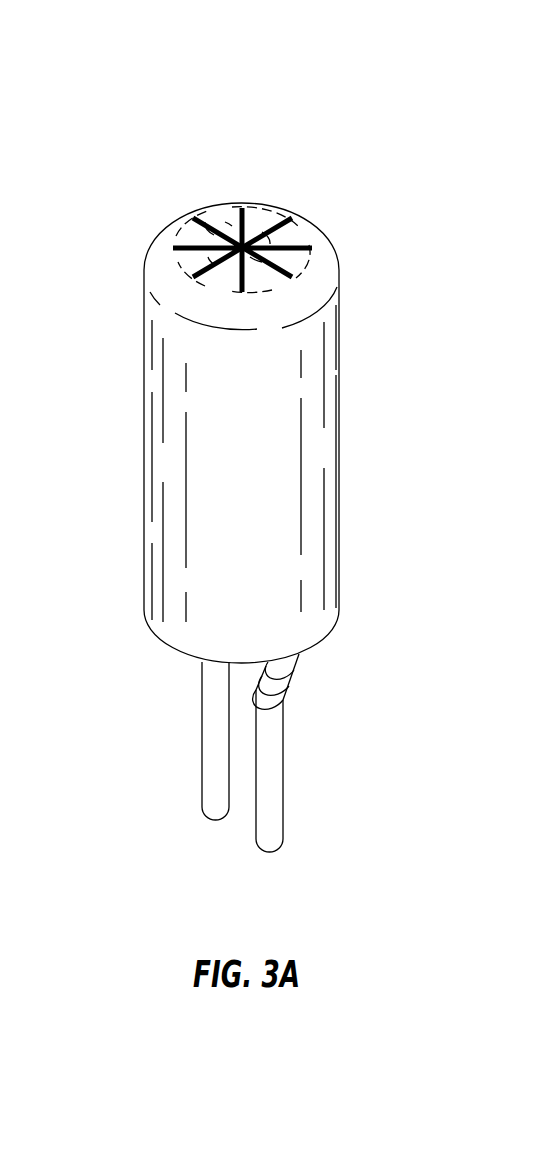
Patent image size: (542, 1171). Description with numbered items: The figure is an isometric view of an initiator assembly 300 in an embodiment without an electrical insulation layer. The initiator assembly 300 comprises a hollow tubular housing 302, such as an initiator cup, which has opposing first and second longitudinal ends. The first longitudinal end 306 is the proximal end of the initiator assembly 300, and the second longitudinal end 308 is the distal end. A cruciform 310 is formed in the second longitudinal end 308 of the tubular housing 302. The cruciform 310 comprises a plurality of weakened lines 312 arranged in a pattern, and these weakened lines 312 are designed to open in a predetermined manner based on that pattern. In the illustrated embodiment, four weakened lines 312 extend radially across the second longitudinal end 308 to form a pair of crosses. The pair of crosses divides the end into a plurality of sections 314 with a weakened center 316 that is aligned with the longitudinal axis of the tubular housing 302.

The initiator assembly 300 is at (254, 434).
The tubular housing 302 is at (172, 458).
The first longitudinal end 306 is at (350, 630).
The second longitudinal end 308 is at (333, 205).
The cruciform 310 is at (205, 188).
The weakened lines 312 is at (246, 208).
The sections 314 is at (226, 214).
The weakened center 316 is at (232, 208).